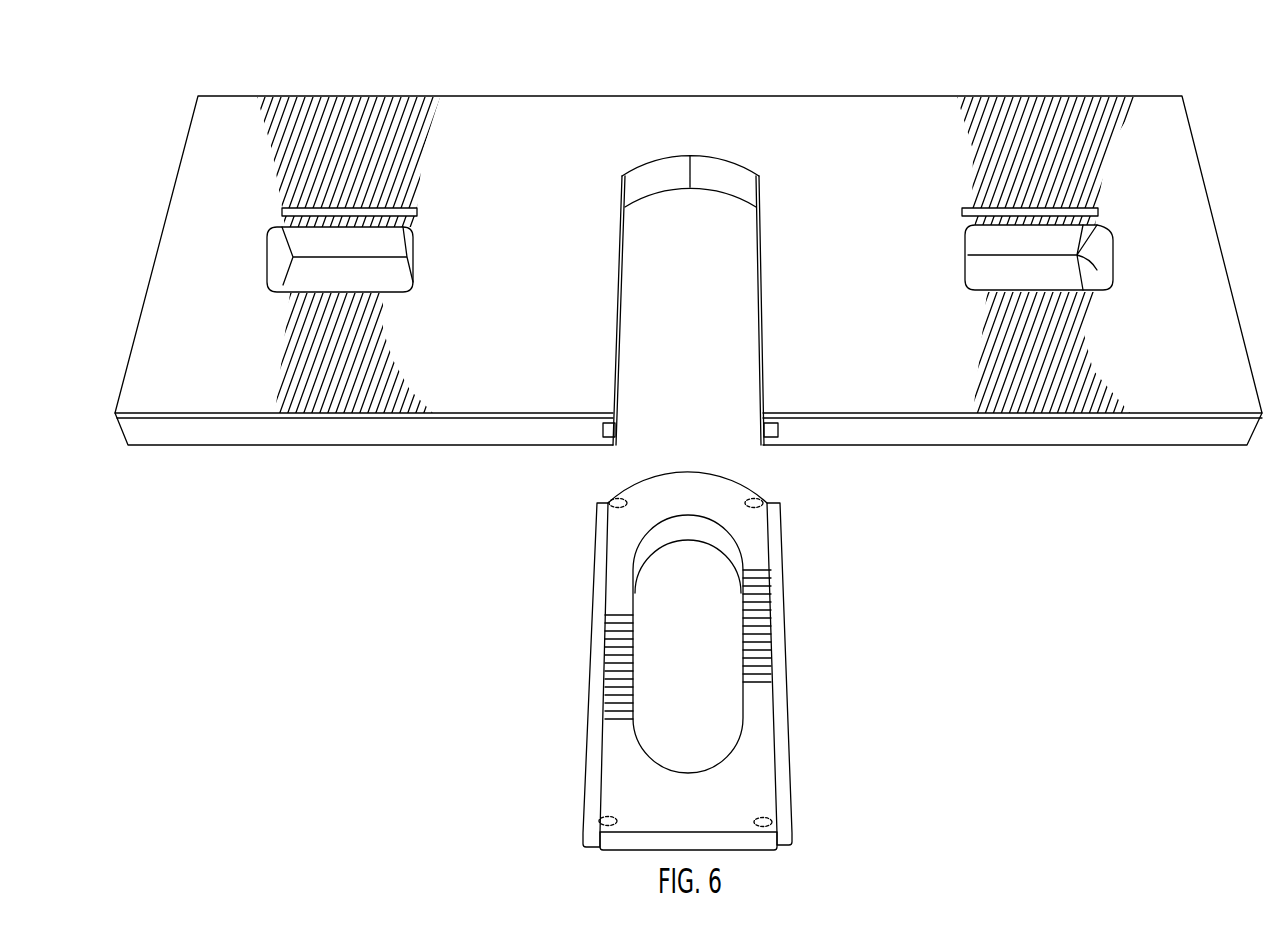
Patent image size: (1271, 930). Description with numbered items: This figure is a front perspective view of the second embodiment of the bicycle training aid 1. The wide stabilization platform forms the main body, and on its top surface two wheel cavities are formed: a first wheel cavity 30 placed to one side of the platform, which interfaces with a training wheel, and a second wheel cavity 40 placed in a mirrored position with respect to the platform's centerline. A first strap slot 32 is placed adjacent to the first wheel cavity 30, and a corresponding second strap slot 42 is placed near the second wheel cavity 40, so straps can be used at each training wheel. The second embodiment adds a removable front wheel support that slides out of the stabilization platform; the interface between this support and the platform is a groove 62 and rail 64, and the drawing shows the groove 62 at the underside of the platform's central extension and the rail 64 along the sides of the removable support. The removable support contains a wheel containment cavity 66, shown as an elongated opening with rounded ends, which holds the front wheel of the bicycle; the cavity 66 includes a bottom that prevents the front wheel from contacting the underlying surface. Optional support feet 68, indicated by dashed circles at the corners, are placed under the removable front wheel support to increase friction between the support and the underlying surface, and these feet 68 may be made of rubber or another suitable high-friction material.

The bicycle training aid 1 is at (940, 68).
The first wheel cavity 30 is at (410, 232).
The first strap slot 32 is at (417, 210).
The second wheel cavity 40 is at (1108, 235).
The second strap slot 42 is at (1098, 210).
The groove 62 is at (610, 437).
The rail 64 is at (593, 658).
The wheel containment cavity 66 is at (740, 530).
The support feet 68 is at (603, 515).